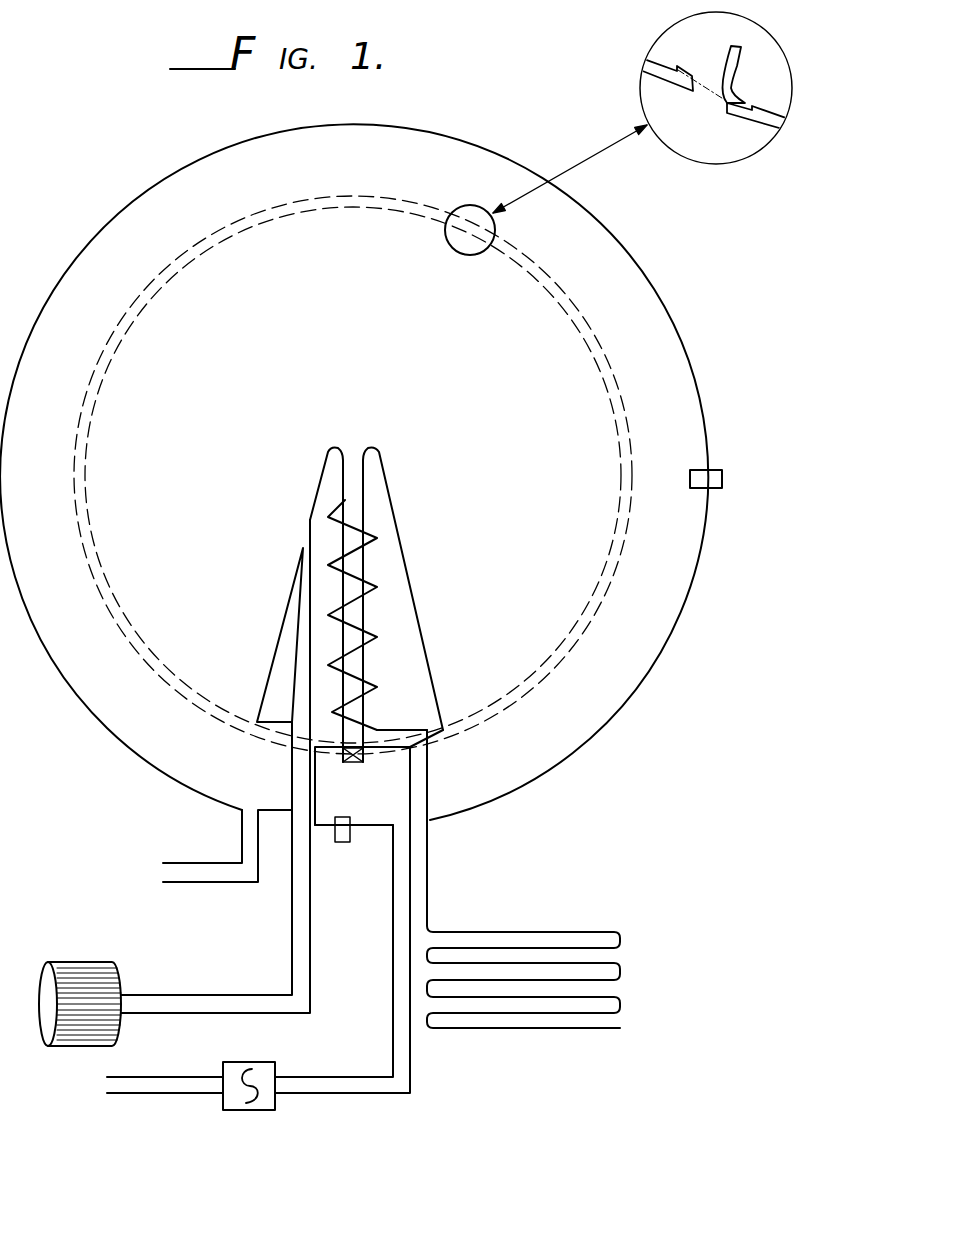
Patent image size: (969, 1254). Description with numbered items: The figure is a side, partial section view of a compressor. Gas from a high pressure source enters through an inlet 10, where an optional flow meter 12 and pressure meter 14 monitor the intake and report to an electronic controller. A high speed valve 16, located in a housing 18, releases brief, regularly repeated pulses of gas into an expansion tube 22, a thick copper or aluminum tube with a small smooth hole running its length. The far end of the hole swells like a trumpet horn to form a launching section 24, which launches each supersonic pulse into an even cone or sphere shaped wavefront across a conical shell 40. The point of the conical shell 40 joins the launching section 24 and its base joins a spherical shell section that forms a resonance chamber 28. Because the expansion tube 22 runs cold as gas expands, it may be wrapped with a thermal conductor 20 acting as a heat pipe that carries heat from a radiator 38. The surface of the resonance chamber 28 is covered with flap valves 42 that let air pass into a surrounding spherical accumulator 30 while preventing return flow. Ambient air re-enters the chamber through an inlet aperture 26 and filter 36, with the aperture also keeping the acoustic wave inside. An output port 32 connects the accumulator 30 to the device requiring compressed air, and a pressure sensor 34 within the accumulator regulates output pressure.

The inlet 10 is at (107, 1083).
The flow meter 12 is at (258, 1111).
The pressure meter 14 is at (343, 842).
The high speed valve 16 is at (352, 763).
The housing 18 is at (397, 749).
The thermal conductor 20 is at (377, 727).
The expansion tube 22 is at (362, 657).
The launching section 24 is at (343, 455).
The inlet aperture 26 is at (305, 542).
The resonance chamber 28 is at (578, 623).
The accumulator 30 is at (45, 648).
The output port 32 is at (167, 872).
The pressure sensor 34 is at (712, 488).
The filter 36 is at (63, 962).
The radiator 38 is at (620, 1007).
The conical shell 40 is at (420, 620).
The flap valves 42 is at (737, 68).